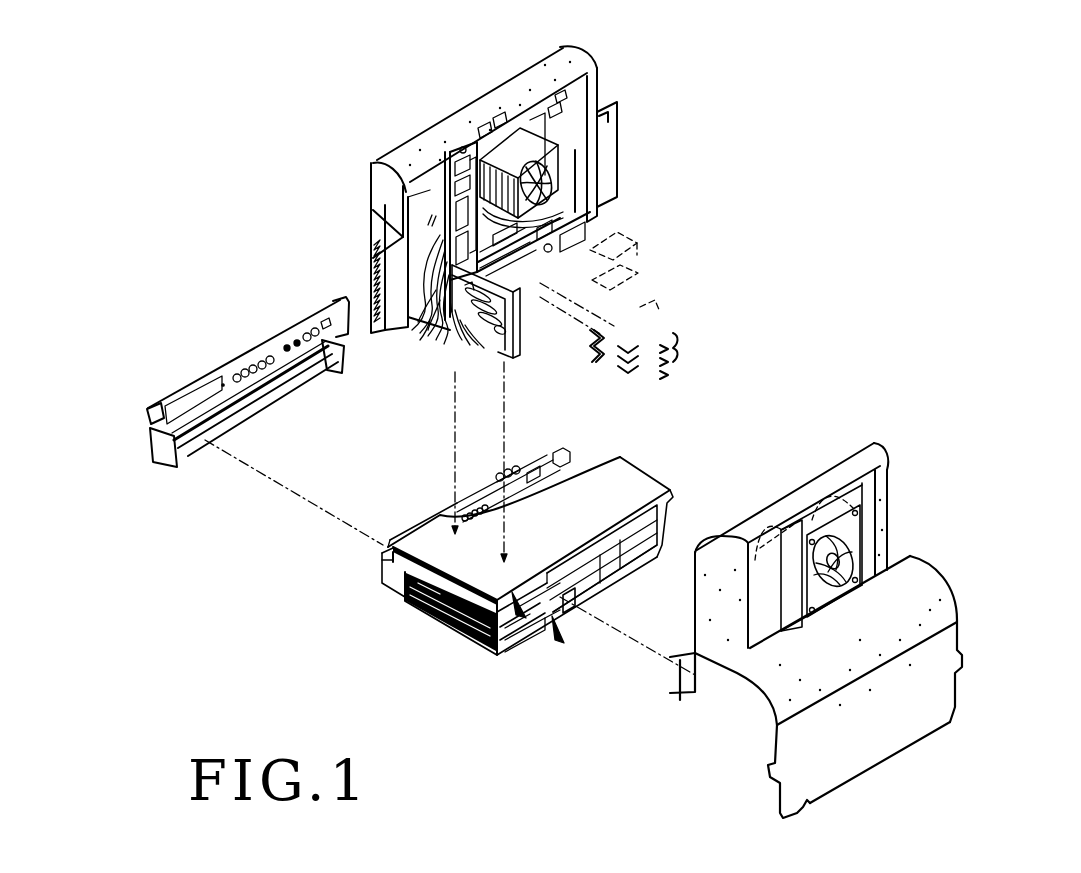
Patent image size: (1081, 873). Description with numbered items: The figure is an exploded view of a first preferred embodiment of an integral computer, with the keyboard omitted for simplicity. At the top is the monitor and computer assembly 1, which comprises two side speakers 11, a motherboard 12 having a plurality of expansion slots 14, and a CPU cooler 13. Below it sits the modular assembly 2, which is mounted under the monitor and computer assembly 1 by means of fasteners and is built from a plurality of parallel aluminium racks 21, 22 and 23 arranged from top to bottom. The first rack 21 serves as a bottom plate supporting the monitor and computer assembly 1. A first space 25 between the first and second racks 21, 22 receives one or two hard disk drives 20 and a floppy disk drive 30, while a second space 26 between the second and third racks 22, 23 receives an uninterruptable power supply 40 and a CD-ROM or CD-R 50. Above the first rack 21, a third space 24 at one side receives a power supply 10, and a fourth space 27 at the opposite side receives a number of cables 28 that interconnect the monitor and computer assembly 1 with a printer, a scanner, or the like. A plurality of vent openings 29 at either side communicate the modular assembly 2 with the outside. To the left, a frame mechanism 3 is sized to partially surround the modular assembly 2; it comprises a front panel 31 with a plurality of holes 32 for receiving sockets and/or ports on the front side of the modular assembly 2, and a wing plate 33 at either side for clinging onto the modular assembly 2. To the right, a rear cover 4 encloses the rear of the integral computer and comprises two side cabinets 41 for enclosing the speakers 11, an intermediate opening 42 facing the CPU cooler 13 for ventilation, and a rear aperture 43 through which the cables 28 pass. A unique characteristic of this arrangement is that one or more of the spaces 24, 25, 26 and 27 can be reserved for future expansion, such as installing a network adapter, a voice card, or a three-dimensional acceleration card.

The monitor and computer assembly 1 is at (432, 100).
The modular assembly 2 is at (372, 620).
The frame mechanism 3 is at (112, 454).
The rear cover 4 is at (992, 578).
The power supply 10 is at (648, 233).
The side speakers 11 is at (372, 243).
The motherboard 12 is at (560, 215).
The CPU cooler 13 is at (570, 198).
The expansion slots 14 is at (517, 292).
The hard disk drives 20 is at (488, 505).
The first rack 21 is at (428, 552).
The second rack 22 is at (503, 653).
The third rack 23 is at (540, 633).
The third space 24 is at (640, 468).
The first space 25 is at (520, 640).
The second space 26 is at (552, 640).
The fourth space 27 is at (398, 193).
The cables 28 is at (427, 335).
The vent openings 29 is at (440, 613).
The floppy disk drive 30 is at (445, 510).
The front panel 31 is at (230, 367).
The holes 32 is at (275, 347).
The wing plate 33 is at (343, 343).
The uninterruptable power supply 40 is at (630, 563).
The side cabinets 41 is at (883, 495).
The intermediate opening 42 is at (847, 577).
The rear aperture 43 is at (808, 805).
The CD-ROM or CD-R 50 is at (570, 605).